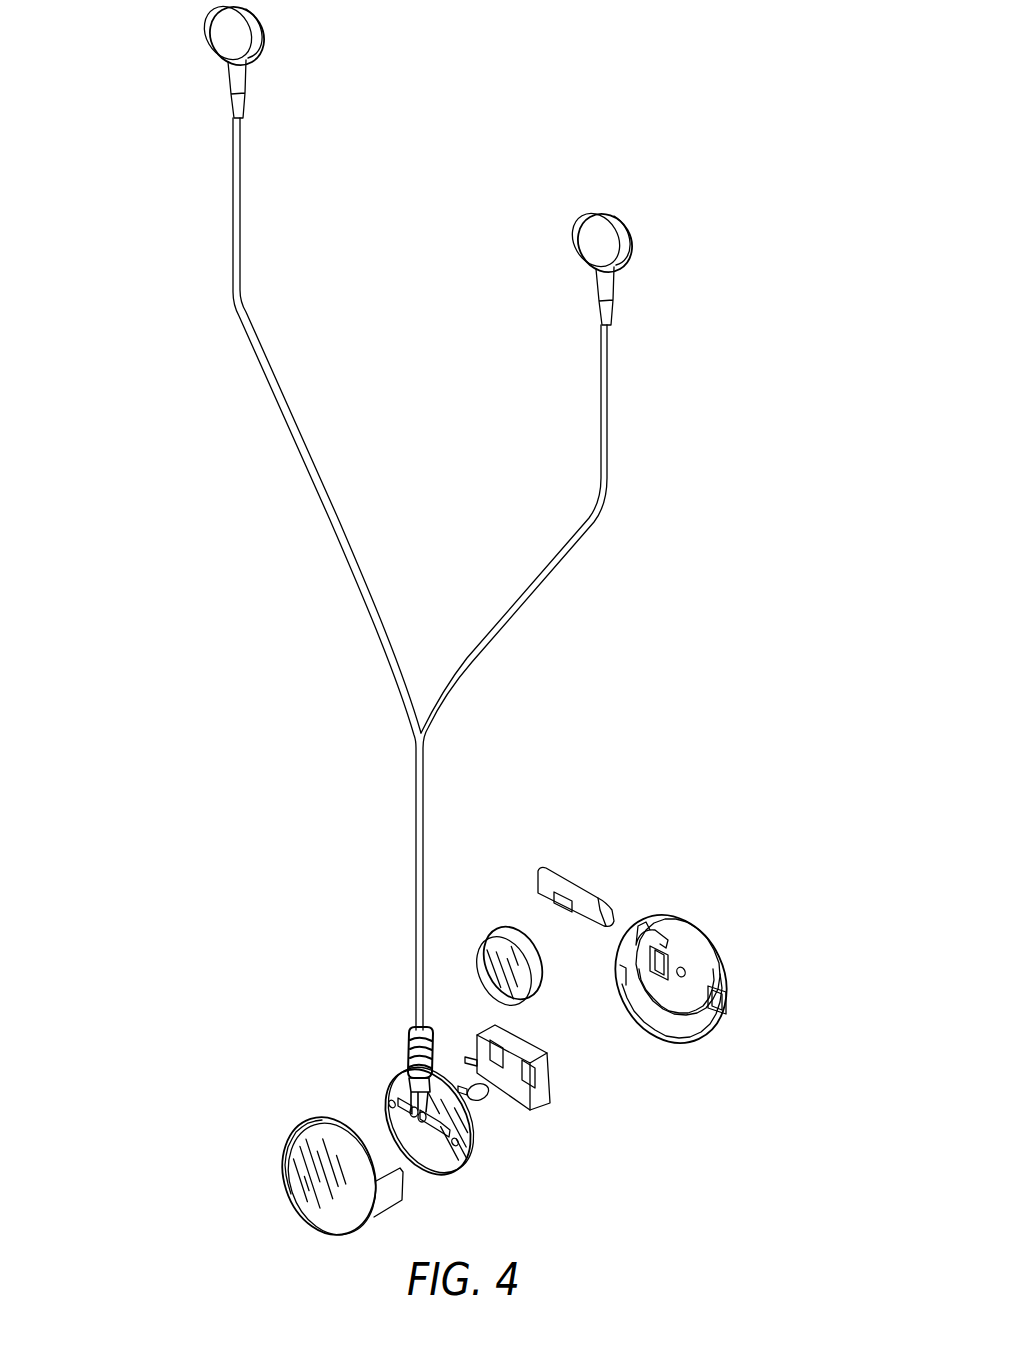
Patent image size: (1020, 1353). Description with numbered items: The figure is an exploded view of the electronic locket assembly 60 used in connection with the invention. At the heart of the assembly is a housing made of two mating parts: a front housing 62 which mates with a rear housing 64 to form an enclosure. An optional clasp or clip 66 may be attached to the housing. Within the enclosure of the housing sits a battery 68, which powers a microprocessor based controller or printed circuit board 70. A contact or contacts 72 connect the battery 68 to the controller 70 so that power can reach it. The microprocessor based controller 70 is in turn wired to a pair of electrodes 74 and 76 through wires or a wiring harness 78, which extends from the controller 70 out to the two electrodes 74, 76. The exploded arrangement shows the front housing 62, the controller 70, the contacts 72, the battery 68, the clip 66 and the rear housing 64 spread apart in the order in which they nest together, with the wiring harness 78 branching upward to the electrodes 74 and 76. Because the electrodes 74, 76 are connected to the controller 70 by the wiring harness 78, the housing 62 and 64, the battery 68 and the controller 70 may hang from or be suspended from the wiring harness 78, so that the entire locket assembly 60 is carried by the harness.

The electronic locket assembly 60 is at (670, 112).
The front housing 62 is at (290, 1167).
The rear housing 64 is at (710, 968).
The clasp or clip 66 is at (572, 880).
The battery 68 is at (487, 933).
The microprocessor based controller or printed circuit board (PCB) 70 is at (397, 1088).
The contact 72 is at (523, 1098).
The electrode 74 is at (223, 40).
The electrode 76 is at (590, 245).
The wiring harness 78 is at (320, 494).